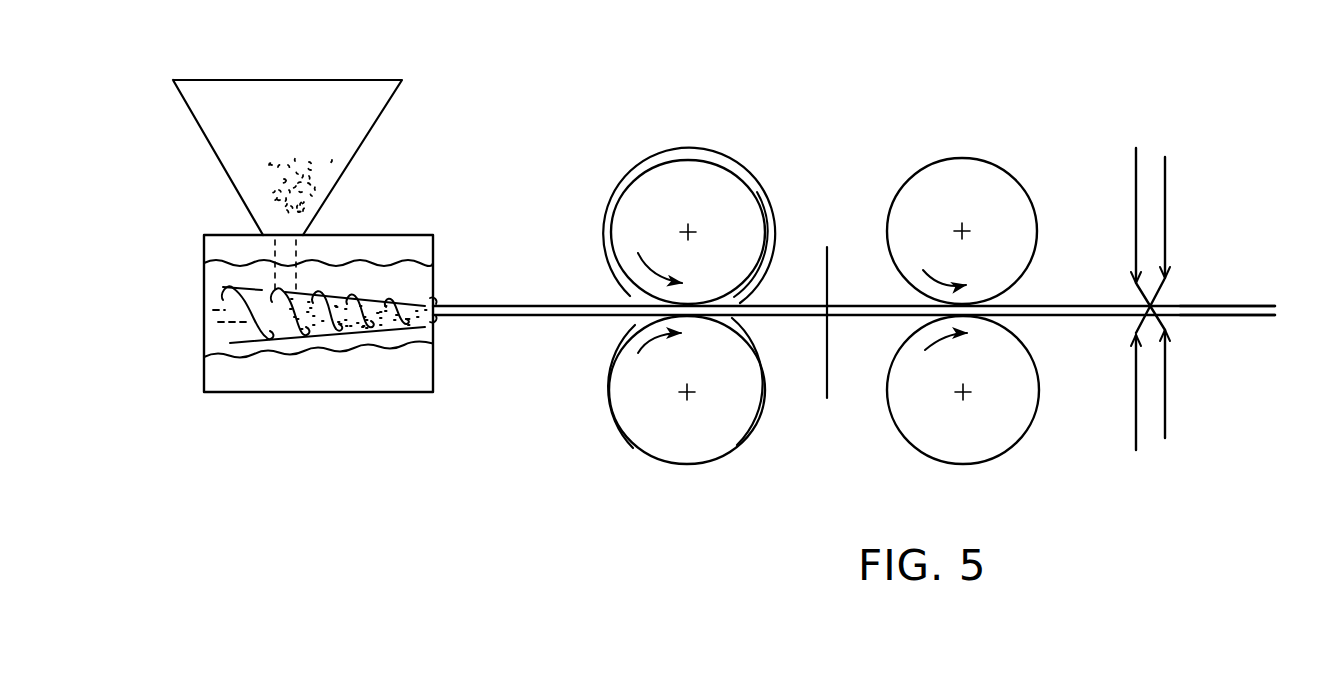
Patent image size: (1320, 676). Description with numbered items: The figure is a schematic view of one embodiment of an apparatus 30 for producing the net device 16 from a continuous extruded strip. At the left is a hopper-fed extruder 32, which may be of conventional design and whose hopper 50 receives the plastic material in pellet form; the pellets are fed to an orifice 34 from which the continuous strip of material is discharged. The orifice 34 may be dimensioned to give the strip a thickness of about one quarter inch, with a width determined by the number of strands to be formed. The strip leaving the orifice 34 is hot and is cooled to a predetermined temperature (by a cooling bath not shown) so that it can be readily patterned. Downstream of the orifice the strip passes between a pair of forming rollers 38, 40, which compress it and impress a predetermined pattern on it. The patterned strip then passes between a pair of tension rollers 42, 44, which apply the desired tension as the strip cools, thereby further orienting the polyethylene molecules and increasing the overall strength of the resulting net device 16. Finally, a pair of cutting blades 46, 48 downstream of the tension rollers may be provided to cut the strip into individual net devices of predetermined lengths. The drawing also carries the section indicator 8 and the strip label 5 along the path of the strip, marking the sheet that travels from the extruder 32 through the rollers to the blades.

The hopper 50 is at (366, 74).
The hopper-fed extruder 32 is at (386, 231).
The orifice 34 is at (440, 300).
The extruded sheet 5 is at (523, 322).
The forming roller 38 is at (602, 192).
The forming roller 40 is at (703, 431).
The apparatus 30 is at (858, 170).
The tension roller 42 is at (980, 186).
The tension roller 44 is at (998, 414).
The section line 8- 8 is at (792, 266).
The cutting blade 46 is at (1154, 266).
The cutting blade 48 is at (1148, 365).
The net device 16 is at (1221, 293).